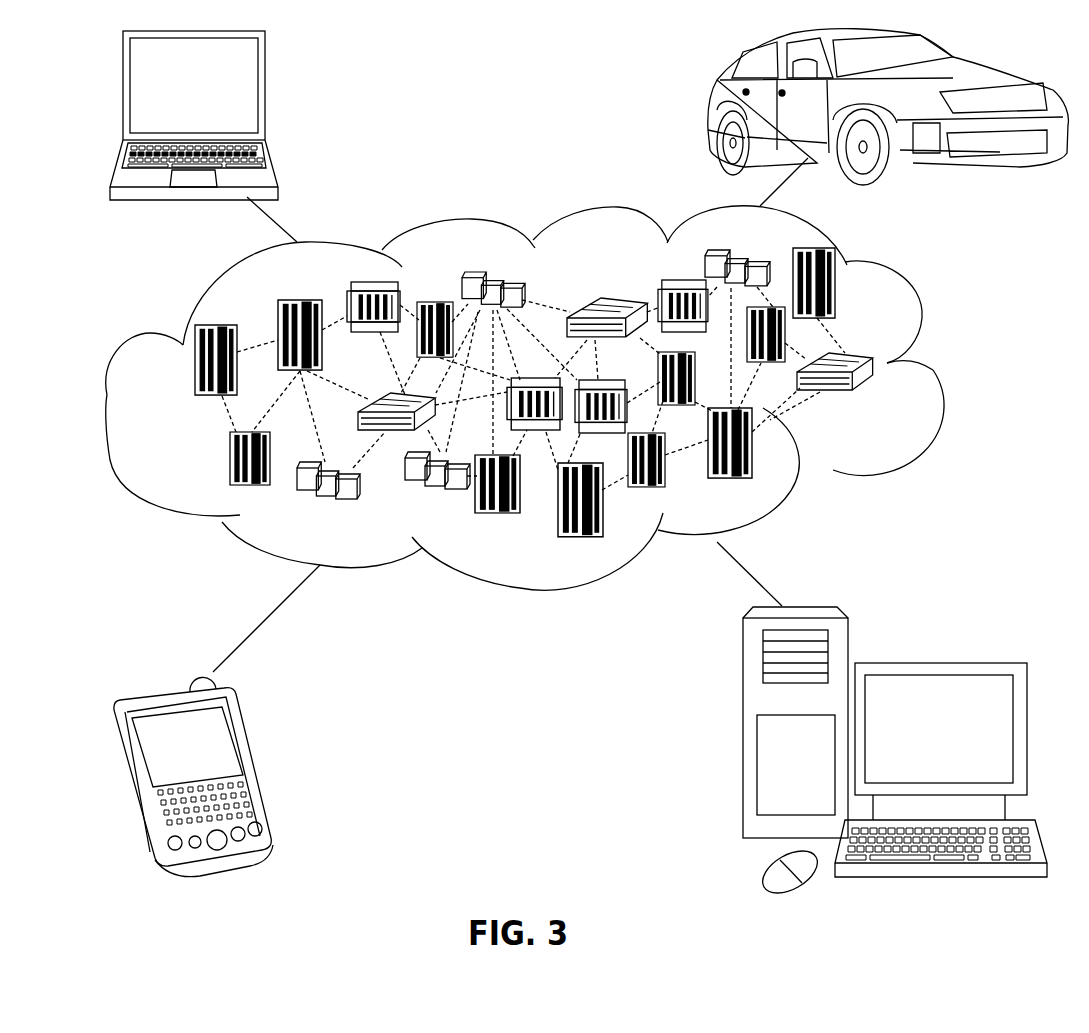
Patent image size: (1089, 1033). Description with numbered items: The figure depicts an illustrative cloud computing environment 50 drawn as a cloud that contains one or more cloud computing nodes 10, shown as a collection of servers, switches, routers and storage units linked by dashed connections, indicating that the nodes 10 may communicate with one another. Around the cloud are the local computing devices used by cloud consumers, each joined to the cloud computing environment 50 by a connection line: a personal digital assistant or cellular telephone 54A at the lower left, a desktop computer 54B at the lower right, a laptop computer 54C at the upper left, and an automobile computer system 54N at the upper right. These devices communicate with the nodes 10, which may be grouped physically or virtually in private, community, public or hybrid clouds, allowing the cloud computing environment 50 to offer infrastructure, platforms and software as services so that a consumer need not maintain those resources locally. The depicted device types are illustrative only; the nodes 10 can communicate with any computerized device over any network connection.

The cloud computing nodes 10 is at (876, 401).
The cloud computing environment 50 is at (935, 372).
The personal digital assistant or cellular telephone 54A is at (255, 762).
The desktop computer 54B is at (937, 662).
The laptop computer 54C is at (265, 96).
The automobile computer system 54N is at (712, 112).